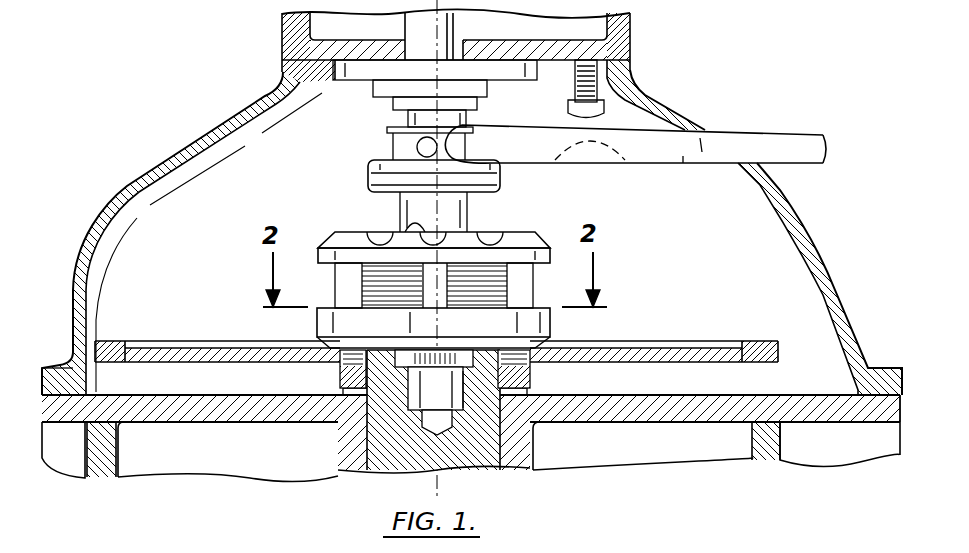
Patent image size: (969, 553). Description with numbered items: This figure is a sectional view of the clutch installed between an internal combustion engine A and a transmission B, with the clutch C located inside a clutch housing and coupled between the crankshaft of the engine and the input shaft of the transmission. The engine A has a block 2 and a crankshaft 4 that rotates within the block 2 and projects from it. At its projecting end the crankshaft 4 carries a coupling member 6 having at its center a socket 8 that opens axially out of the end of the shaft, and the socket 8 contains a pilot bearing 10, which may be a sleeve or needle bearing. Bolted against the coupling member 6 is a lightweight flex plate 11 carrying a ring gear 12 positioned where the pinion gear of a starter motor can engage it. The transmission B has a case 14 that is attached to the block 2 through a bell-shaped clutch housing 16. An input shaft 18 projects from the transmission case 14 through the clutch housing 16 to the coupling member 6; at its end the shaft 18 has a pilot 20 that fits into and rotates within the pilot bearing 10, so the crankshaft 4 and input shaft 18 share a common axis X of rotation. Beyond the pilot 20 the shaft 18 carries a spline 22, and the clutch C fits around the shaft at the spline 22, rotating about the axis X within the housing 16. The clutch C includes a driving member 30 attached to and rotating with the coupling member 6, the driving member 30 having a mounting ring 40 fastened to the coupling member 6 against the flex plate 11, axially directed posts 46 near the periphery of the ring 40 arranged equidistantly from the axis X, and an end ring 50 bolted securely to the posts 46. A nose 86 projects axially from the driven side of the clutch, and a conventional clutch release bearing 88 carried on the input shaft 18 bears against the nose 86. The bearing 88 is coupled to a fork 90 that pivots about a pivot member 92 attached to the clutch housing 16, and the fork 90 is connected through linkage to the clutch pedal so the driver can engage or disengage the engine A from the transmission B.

The block 2 is at (643, 418).
The crankshaft 4 is at (387, 467).
The coupling member 6 is at (530, 378).
The socket 8 is at (487, 470).
The pilot bearing 10 is at (410, 397).
The flex plate 11 is at (680, 345).
The ring gear 12 is at (780, 338).
The transmission case 14 is at (283, 33).
The clutch housing 16 is at (146, 170).
The input shaft 18 is at (402, 118).
The pilot 20 is at (440, 400).
The spline 22 is at (447, 360).
The driving member 30 is at (316, 322).
The mounting ring 40 is at (551, 329).
The posts 46 is at (337, 280).
The end ring 50 is at (547, 248).
The nose 86 is at (413, 221).
The clutch release bearing 88 is at (500, 180).
The fork 90 is at (683, 163).
The pivot member 92 is at (592, 163).
The internal combustion engine A is at (217, 478).
The transmission B is at (638, 28).
The clutch C is at (334, 227).
The axis X is at (437, 490).